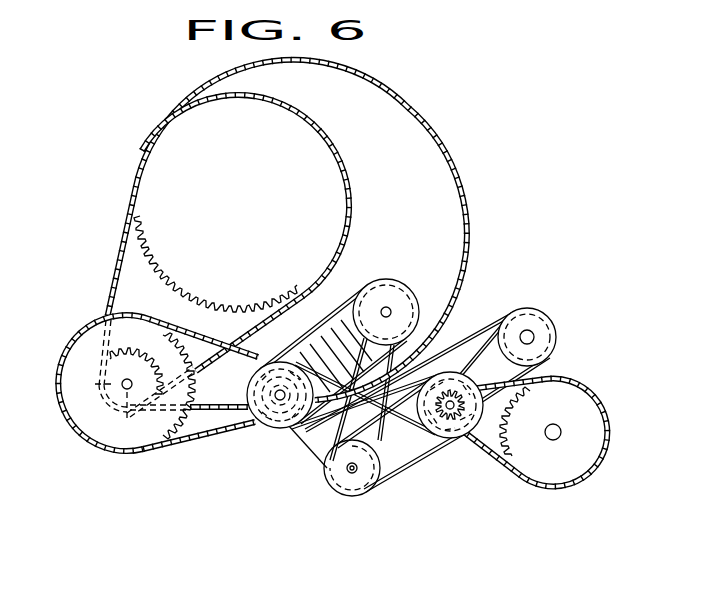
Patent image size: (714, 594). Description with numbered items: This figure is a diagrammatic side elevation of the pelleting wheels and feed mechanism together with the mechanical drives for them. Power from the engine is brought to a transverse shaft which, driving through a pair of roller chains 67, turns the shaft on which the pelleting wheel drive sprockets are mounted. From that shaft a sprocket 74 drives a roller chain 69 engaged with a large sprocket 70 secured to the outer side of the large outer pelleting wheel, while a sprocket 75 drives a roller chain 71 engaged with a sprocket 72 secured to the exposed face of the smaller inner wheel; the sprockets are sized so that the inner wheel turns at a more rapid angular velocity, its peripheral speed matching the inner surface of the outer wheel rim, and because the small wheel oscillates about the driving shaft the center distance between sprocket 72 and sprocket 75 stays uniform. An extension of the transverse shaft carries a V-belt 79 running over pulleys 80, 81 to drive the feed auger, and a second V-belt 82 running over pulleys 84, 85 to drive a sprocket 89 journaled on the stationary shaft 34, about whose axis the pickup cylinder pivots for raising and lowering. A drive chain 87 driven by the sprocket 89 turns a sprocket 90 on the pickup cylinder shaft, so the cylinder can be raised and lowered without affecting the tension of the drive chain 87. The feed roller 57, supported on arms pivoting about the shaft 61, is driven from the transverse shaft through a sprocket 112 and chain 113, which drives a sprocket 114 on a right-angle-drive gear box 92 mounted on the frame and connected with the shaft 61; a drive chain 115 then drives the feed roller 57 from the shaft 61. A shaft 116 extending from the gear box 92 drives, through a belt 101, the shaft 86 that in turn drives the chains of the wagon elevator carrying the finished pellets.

The stationary shaft 34 is at (470, 448).
The feed roller 57 is at (308, 335).
The shaft 61 is at (330, 430).
The roller chains 67 is at (150, 453).
The roller chain 69 is at (227, 400).
The large sprocket 70 is at (454, 233).
The roller chain 71 is at (240, 338).
The sprocket 72 is at (332, 231).
The sprocket 74 is at (95, 397).
The sprocket 75 is at (136, 393).
The V-belt 79 is at (346, 300).
The pulley 80 is at (271, 422).
The pulley 81 is at (400, 298).
The second V-belt 82 is at (422, 372).
The pulley 84 is at (240, 433).
The pulley 85 is at (465, 352).
The shaft 86 is at (540, 340).
The drive chain 87 is at (507, 460).
The sprocket 89 is at (444, 438).
The sprocket 90 is at (580, 458).
The right-angle-drive gear box 92 is at (346, 478).
The belt 101 is at (382, 469).
The sprocket 112 is at (298, 446).
The chain 113 is at (318, 462).
The sprocket 114 is at (380, 486).
The drive chain 115 is at (276, 356).
The shaft 116 is at (352, 476).